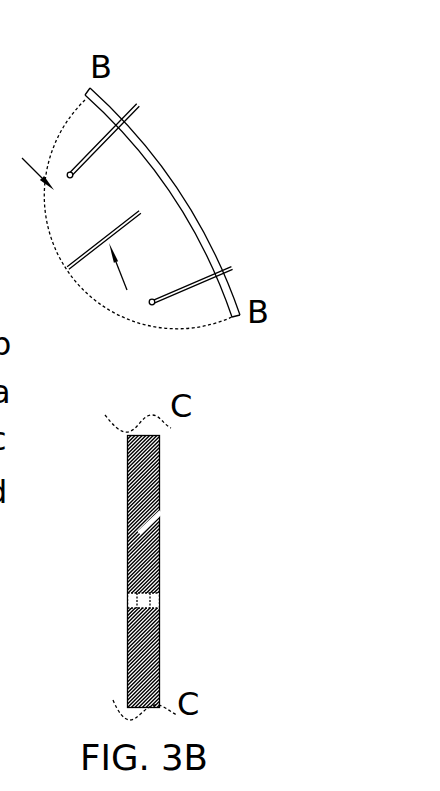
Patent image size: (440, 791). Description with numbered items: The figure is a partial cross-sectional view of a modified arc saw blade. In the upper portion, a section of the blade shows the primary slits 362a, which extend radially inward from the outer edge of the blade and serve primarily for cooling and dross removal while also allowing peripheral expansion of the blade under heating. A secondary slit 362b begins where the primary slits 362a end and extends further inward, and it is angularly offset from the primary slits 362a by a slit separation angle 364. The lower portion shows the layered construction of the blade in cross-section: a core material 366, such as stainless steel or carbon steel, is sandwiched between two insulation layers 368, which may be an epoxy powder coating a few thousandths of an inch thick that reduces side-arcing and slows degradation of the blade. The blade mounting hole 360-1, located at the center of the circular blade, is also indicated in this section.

The primary slits 362a is at (140, 103).
The secondary slits 362b is at (141, 211).
The slit separation angle 364 is at (74, 224).
The core material 366 is at (163, 506).
The insulation layers 368 is at (180, 445).
The blade mounting hole 360-1 is at (180, 572).